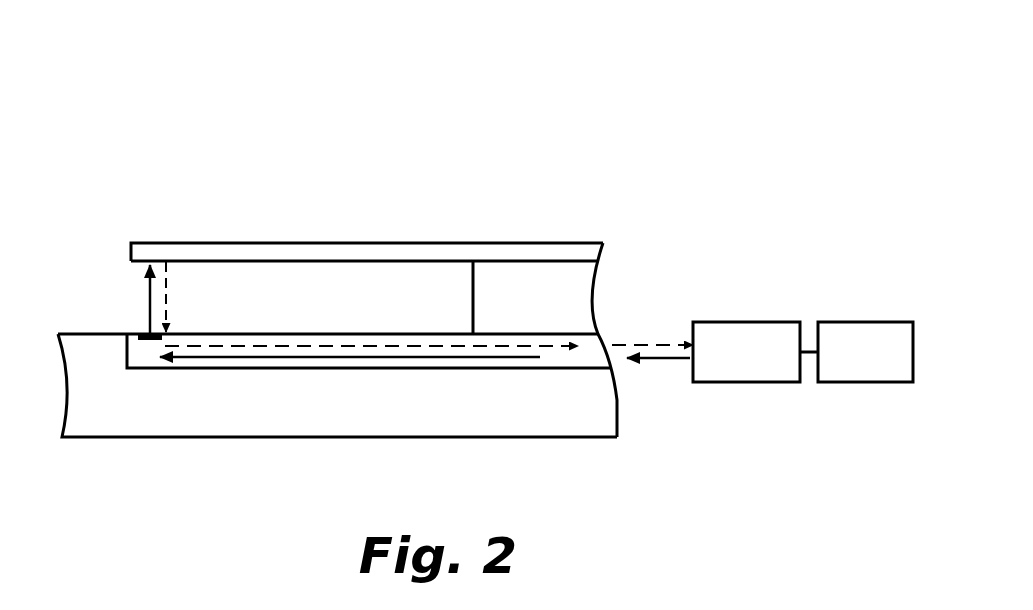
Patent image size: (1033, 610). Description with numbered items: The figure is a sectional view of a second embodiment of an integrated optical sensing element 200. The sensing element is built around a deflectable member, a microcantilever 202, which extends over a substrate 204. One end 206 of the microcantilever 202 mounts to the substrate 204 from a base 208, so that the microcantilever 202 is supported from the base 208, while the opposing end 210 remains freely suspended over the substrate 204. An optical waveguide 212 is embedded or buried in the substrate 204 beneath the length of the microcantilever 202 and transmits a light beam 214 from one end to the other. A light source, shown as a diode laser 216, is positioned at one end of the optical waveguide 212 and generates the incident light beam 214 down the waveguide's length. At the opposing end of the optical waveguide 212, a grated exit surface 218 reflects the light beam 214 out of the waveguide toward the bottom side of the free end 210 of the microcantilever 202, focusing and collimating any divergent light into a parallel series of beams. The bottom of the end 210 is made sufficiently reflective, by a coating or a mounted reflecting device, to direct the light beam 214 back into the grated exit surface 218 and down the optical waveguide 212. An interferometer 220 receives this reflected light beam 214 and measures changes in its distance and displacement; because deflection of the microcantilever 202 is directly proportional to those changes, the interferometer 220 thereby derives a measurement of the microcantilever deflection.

The integrated optical sensing element 200 is at (575, 130).
The microcantilever 202 is at (368, 243).
The substrate 204 is at (547, 418).
The one end of the microcantilever 206 is at (553, 228).
The base 208 is at (535, 297).
The opposing end of the microcantilever 210 is at (150, 230).
The optical waveguide 212 is at (330, 368).
The light beam 214 is at (166, 280).
The diode laser 216 is at (865, 352).
The grated exit surface 218 is at (128, 302).
The interferometer 220 is at (755, 352).